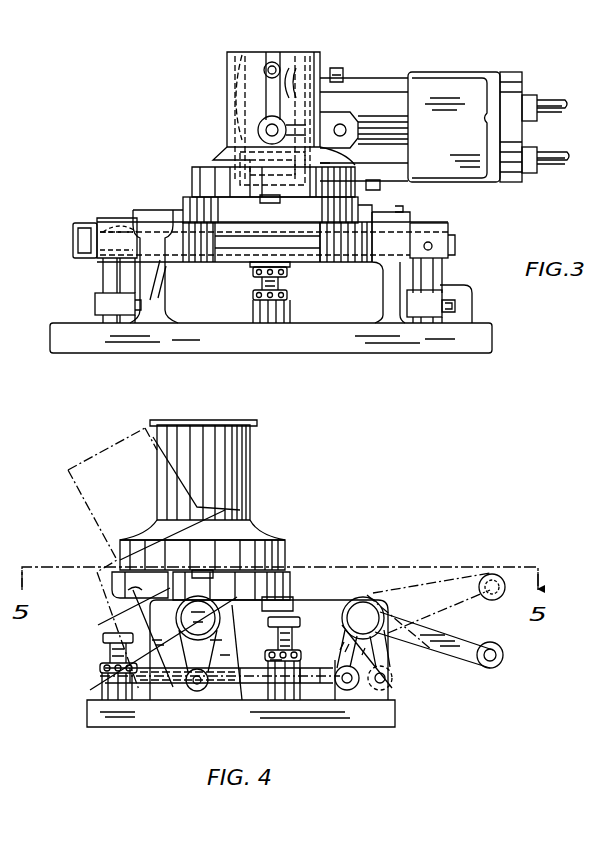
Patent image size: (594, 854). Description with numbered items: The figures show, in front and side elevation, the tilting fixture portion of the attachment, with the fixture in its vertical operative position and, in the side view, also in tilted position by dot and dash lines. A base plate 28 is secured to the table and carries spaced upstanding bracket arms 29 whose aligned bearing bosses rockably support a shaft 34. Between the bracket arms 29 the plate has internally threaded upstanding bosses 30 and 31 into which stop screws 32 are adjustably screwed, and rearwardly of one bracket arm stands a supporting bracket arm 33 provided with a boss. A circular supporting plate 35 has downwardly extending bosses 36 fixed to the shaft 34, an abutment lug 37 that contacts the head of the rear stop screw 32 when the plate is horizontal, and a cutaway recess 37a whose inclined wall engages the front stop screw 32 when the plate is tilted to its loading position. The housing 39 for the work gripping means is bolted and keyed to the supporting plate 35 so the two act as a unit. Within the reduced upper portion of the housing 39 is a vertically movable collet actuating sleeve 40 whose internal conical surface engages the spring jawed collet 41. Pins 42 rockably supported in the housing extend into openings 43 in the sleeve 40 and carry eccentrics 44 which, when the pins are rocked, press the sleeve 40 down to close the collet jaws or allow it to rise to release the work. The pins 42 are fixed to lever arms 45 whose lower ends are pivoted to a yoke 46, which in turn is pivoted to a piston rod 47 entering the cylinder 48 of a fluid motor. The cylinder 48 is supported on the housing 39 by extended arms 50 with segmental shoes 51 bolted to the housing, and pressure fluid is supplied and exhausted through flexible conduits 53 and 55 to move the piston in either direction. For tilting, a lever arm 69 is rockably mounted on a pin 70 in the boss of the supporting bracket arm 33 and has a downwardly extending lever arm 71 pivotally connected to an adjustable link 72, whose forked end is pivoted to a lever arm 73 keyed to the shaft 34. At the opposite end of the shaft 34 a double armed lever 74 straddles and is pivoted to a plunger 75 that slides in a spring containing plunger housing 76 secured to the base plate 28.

In FIG. 3, the base plate 28 is at (335, 330).
In FIG. 4, the base plate 28 is at (158, 727).
In FIG. 3, the bracket arms 29 is at (152, 298).
In FIG. 4, the bracket arms 29 is at (166, 660).
In FIG. 3, the upstanding boss 30 is at (258, 268).
In FIG. 4, the upstanding boss 30 is at (292, 668).
In FIG. 3, the upstanding boss 31 is at (291, 306).
In FIG. 4, the upstanding boss 31 is at (103, 678).
In FIG. 3, the stop screws 32 is at (289, 275).
In FIG. 4, the stop screws 32 is at (104, 642).
In FIG. 4, the supporting bracket arm 33 is at (340, 613).
In FIG. 3, the shaft 34 is at (240, 264).
In FIG. 4, the shaft 34 is at (198, 634).
In FIG. 3, the supporting plate 35 is at (364, 196).
In FIG. 4, the supporting plate 35 is at (222, 586).
In FIG. 3, the bosses 36 is at (205, 271).
In FIG. 4, the abutment lug 37 is at (293, 604).
In FIG. 4, the cutaway recess 37a is at (145, 596).
In FIG. 3, the housing 39 is at (215, 152).
In FIG. 4, the housing 39 is at (273, 552).
In FIG. 3, the collet actuating sleeve 40 is at (227, 112).
In FIG. 4, the collet actuating sleeve 40 is at (203, 470).
In FIG. 3, the spring jawed collet 41 is at (310, 55).
In FIG. 3, the pins 42 is at (292, 68).
In FIG. 3, the openings 43 is at (235, 52).
In FIG. 3, the eccentrics 44 is at (274, 62).
In FIG. 3, the lever arms 45 is at (272, 94).
In FIG. 3, the yoke 46 is at (300, 128).
In FIG. 3, the piston rod 47 is at (372, 119).
In FIG. 3, the cylinder 48 is at (460, 132).
In FIG. 3, the extended arms 50 is at (378, 87).
In FIG. 3, the segmental shoes 51 is at (335, 70).
In FIG. 3, the conduit 53 is at (548, 100).
In FIG. 3, the conduit 55 is at (548, 158).
In FIG. 4, the lever arm 69 is at (470, 642).
In FIG. 4, the pin 70 is at (382, 592).
In FIG. 4, the lever arm 71 is at (365, 653).
In FIG. 3, the adjustable link 72 is at (100, 255).
In FIG. 4, the adjustable link 72 is at (254, 688).
In FIG. 3, the lever arm 73 is at (105, 284).
In FIG. 4, the lever arm 73 is at (186, 682).
In FIG. 3, the double armed lever 74 is at (429, 282).
In FIG. 3, the plunger 75 is at (431, 317).
In FIG. 3, the plunger housing 76 is at (470, 306).